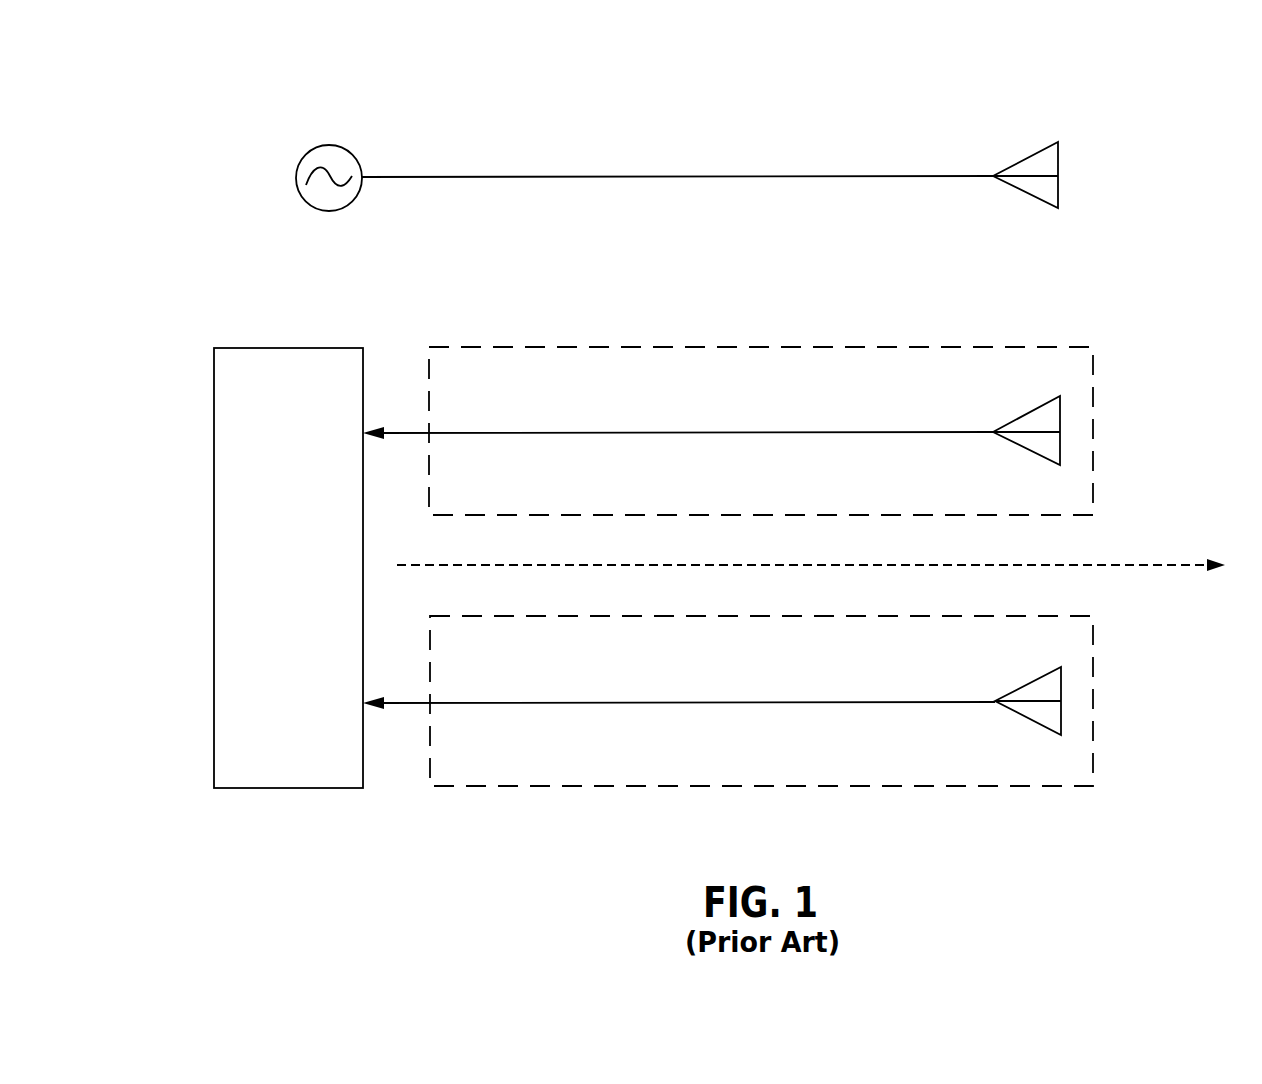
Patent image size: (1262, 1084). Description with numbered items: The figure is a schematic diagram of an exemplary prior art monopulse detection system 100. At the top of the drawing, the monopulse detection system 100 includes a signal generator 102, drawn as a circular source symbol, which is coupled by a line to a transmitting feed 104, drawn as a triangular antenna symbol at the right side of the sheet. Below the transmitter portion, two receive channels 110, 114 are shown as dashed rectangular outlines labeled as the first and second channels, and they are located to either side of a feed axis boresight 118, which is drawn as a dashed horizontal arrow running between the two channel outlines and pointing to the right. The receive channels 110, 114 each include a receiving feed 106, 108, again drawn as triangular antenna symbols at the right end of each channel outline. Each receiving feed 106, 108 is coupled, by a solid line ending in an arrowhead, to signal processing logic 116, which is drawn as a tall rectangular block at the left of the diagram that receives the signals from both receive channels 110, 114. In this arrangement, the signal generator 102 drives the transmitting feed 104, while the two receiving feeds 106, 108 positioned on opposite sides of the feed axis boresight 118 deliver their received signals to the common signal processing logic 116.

The monopulse detection system 100 is at (272, 99).
The signal generator 102 is at (328, 157).
The transmitting feed 104 is at (1058, 157).
The receiving feed 106 is at (1060, 415).
The receiving feed 108 is at (1061, 684).
The receive channel 110 is at (771, 404).
The receive channel 114 is at (771, 729).
The signal processing logic 116 is at (283, 378).
The feed axis boresight 118 is at (1177, 563).